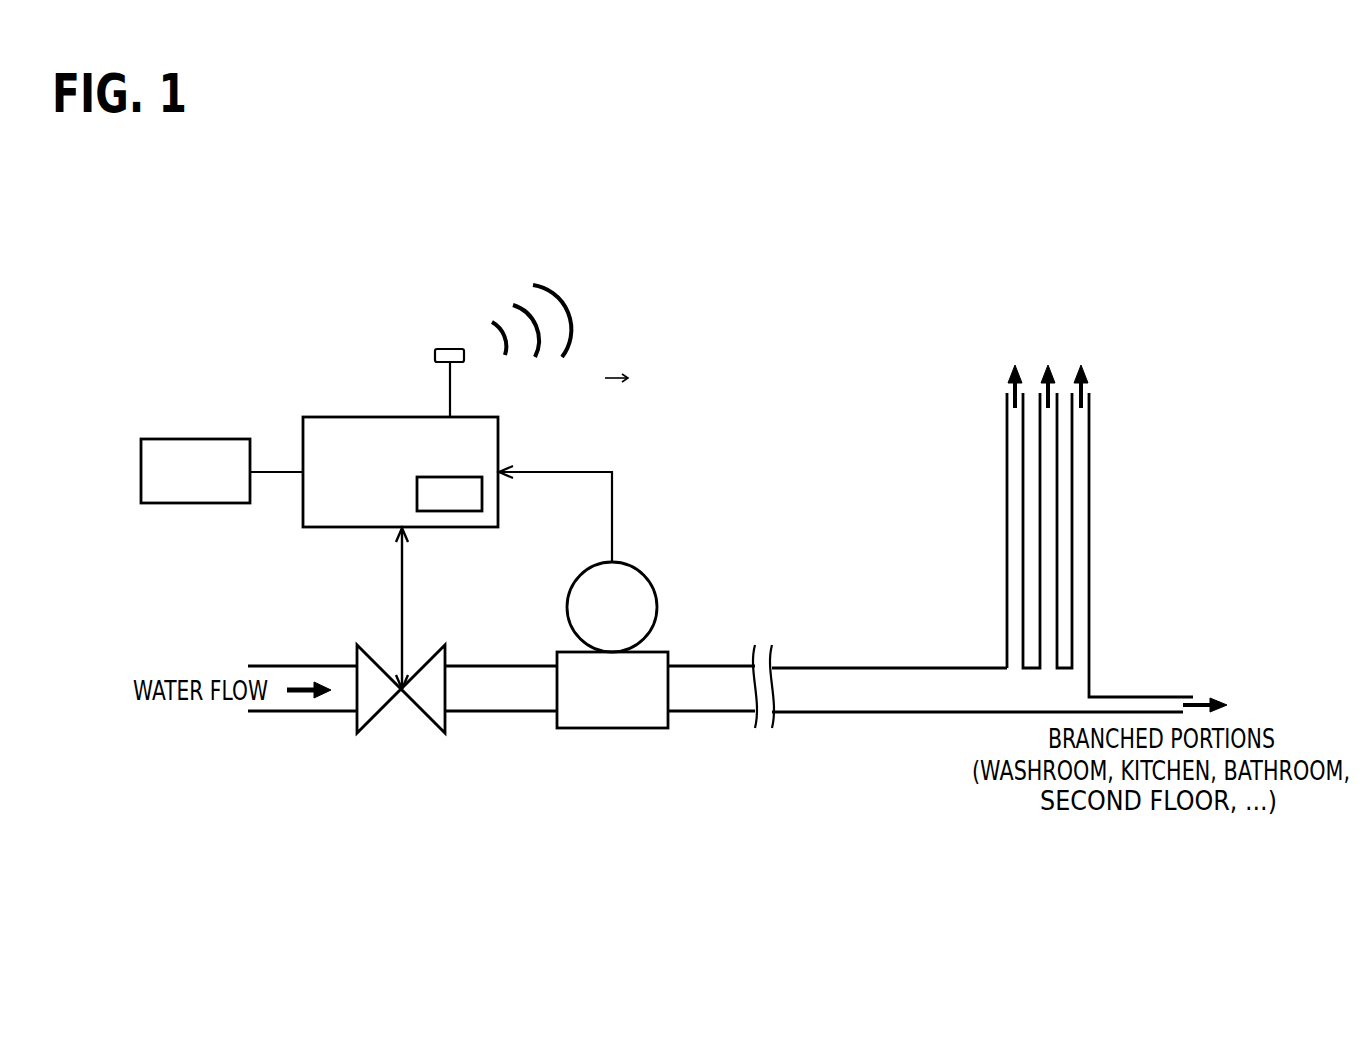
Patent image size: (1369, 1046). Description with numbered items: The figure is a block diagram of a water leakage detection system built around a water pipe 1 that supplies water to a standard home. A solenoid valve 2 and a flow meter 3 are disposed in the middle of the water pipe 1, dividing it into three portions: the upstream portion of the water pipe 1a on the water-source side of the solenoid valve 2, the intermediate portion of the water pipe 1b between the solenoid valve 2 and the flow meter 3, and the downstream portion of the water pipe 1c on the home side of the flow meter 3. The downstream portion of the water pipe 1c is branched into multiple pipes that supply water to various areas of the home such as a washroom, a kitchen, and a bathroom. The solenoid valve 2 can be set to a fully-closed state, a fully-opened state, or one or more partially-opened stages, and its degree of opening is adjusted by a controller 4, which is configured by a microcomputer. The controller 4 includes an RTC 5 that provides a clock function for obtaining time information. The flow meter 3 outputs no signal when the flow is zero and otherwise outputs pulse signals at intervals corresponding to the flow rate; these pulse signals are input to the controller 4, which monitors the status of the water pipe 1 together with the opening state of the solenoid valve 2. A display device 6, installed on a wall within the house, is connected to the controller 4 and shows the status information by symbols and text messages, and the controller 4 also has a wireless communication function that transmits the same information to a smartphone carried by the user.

The water pipe 1 is at (737, 609).
The upstream portion of the water pipe 1a is at (302, 711).
The intermediate portion of the water pipe 1b is at (500, 712).
The downstream portion of the water pipe 1c is at (872, 712).
The solenoid valve 2 is at (404, 697).
The flow meter 3 is at (612, 728).
The controller 4 is at (498, 441).
The RTC 5 is at (450, 511).
The display device 6 is at (141, 470).